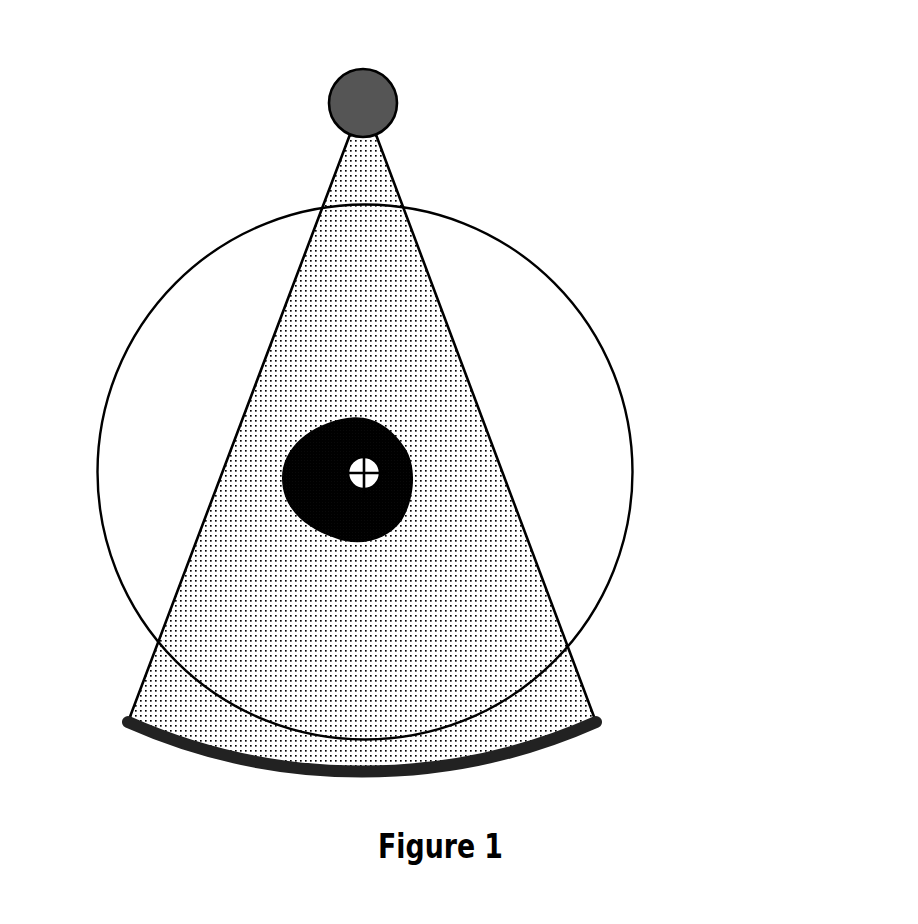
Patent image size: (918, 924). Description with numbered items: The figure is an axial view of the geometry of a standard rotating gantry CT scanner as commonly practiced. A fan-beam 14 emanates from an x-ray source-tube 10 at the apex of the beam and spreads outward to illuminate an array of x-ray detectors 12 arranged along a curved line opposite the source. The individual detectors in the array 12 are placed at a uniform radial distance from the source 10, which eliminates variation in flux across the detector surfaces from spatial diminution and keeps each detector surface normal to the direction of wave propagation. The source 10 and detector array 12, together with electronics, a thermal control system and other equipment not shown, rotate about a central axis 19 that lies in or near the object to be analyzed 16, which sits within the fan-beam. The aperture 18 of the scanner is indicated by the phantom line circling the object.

The x-ray source-tube 10 is at (397, 70).
The x-ray detector array 12 is at (610, 724).
The fan-beam 14 is at (462, 355).
The object to be analyzed 16 is at (330, 488).
The aperture 18 is at (627, 422).
The central axis 19 is at (380, 489).